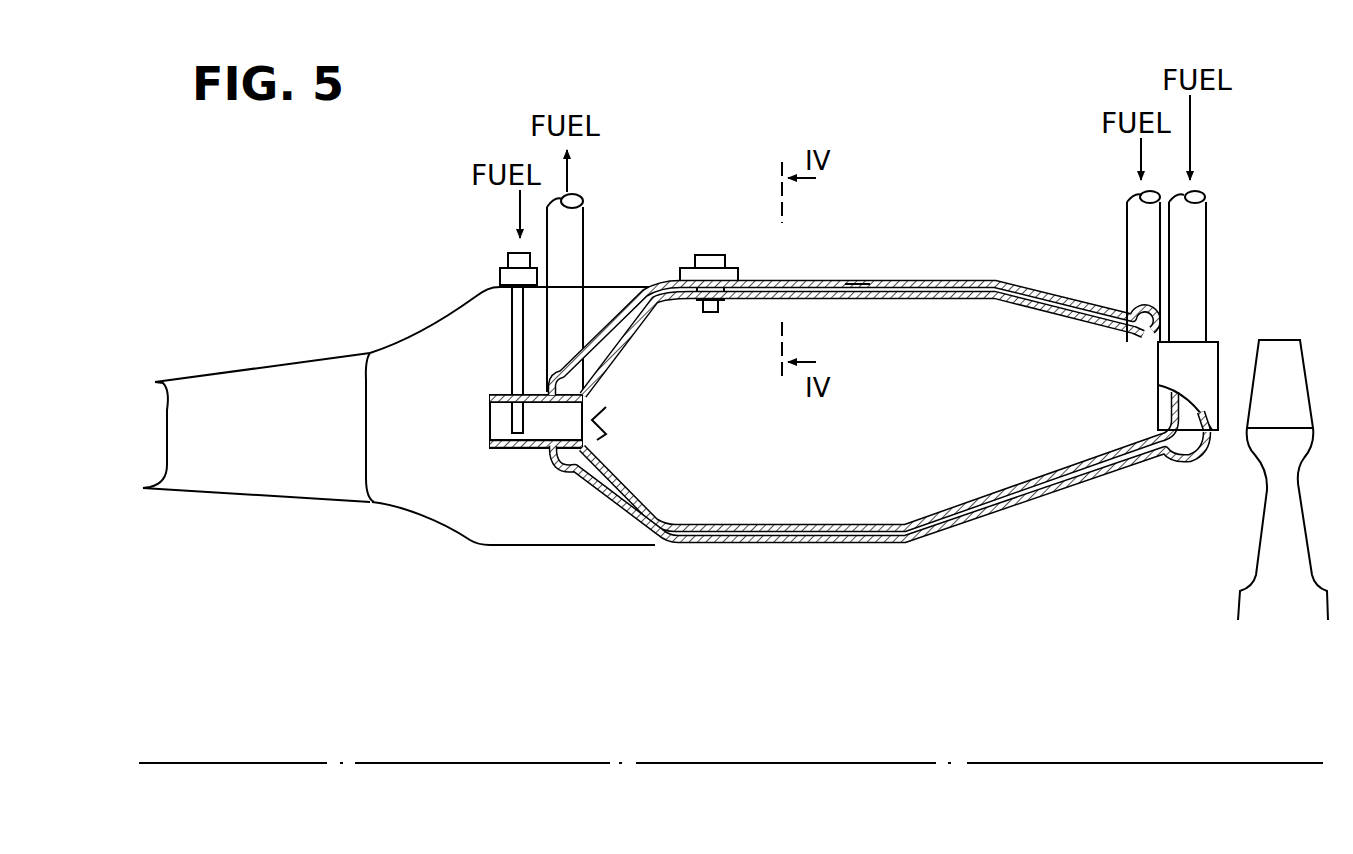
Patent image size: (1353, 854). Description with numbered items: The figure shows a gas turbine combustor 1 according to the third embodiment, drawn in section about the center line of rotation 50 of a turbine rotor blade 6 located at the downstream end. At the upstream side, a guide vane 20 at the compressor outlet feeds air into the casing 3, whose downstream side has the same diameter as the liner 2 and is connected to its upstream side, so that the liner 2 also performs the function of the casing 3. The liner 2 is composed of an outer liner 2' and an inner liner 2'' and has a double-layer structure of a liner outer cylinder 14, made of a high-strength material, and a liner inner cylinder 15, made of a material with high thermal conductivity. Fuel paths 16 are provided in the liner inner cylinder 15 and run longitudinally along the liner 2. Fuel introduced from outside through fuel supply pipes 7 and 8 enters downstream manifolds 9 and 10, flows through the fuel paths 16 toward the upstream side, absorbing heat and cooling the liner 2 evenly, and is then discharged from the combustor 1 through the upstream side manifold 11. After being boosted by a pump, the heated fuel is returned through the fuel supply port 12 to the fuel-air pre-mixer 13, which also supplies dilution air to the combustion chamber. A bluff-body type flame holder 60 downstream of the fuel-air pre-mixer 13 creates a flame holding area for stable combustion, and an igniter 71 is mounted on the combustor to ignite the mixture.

The gas turbine combustor 1 is at (858, 282).
The liner 2 is at (879, 400).
The outer liner 2' is at (854, 266).
The inner liner 2'' is at (880, 547).
The casing 3 is at (407, 337).
The turbine rotor blade 6 is at (1287, 350).
The fuel supply pipe 7 is at (1130, 216).
The fuel supply pipe 8 is at (1201, 237).
The downstream manifold 9 is at (1140, 323).
The downstream manifold 10 is at (1182, 450).
The upstream side manifold 11 is at (560, 467).
The fuel supply port 12 is at (507, 261).
The fuel-air pre-mixer 13 is at (497, 448).
The liner outer cylinder 14 is at (802, 282).
The liner inner cylinder 15 is at (968, 300).
The fuel paths 16 is at (622, 325).
The guide vane 20 is at (270, 478).
The center line of rotation 50 is at (1178, 762).
The bluff-body type flame holder 60 is at (597, 440).
The igniter 71 is at (710, 254).